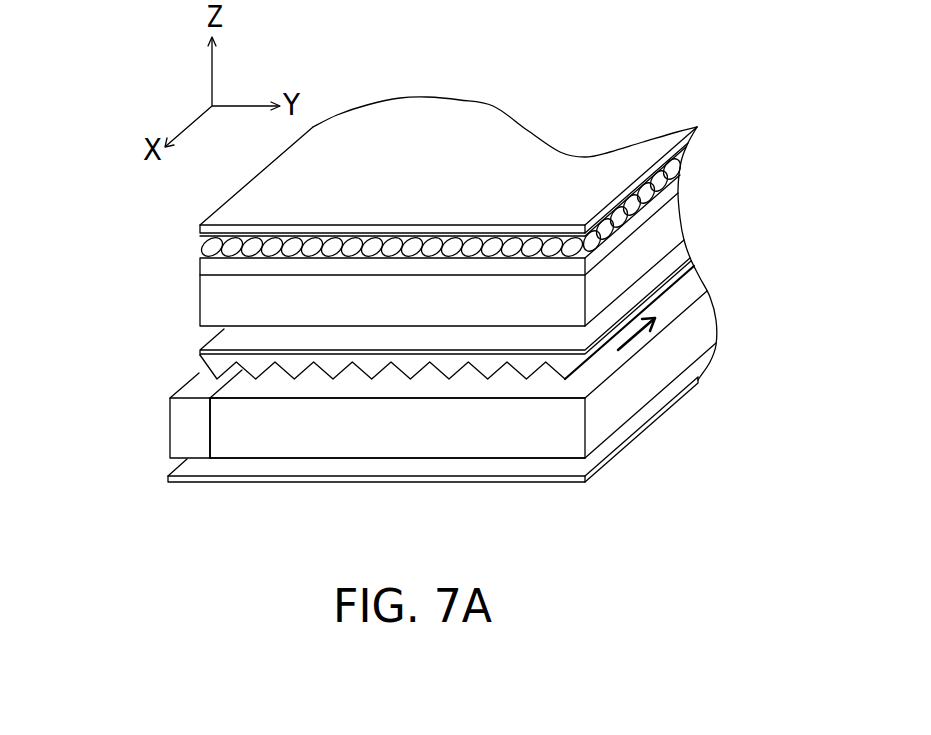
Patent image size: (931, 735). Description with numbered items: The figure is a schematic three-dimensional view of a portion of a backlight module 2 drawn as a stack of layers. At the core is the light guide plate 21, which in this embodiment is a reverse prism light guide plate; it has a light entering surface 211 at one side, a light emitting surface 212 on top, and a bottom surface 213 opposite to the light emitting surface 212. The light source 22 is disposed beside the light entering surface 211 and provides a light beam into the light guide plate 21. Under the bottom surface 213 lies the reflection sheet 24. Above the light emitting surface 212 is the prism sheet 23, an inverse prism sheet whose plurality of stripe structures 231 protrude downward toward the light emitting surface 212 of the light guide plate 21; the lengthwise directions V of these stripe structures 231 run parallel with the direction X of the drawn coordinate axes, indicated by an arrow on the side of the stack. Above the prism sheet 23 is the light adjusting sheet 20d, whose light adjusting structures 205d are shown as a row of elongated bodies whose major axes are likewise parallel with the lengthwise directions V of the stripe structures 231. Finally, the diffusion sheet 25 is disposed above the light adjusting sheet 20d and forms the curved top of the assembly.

The backlight module 2 is at (759, 72).
The diffusion sheet 25 is at (497, 135).
The light adjusting structures 205d is at (228, 246).
The light adjusting sheet 20d is at (197, 258).
The prism sheet 23 is at (215, 346).
The stripe structures 231 is at (208, 371).
The light source 22 is at (180, 433).
The light guide plate 21 is at (463, 417).
The light entering surface 211 is at (222, 426).
The light emitting surface 212 is at (310, 381).
The bottom surface 213 is at (492, 460).
The reflection sheet 24 is at (168, 480).
The lengthwise directions of the stripe structures V is at (636, 350).